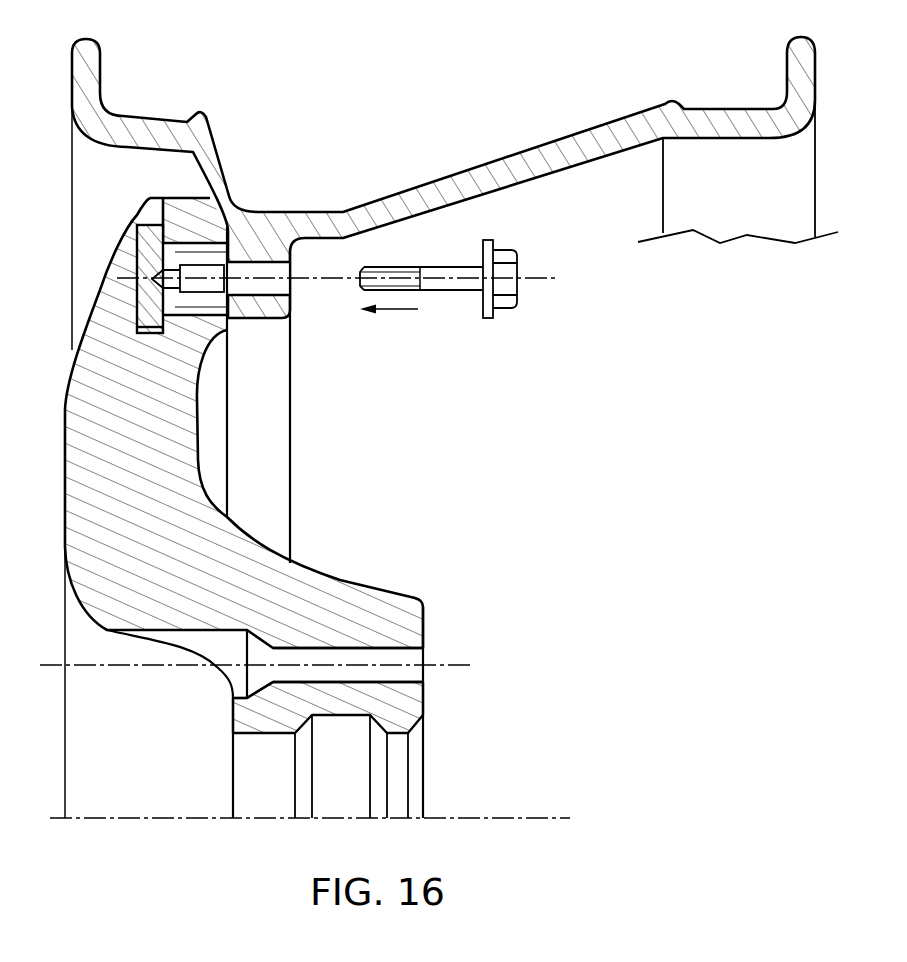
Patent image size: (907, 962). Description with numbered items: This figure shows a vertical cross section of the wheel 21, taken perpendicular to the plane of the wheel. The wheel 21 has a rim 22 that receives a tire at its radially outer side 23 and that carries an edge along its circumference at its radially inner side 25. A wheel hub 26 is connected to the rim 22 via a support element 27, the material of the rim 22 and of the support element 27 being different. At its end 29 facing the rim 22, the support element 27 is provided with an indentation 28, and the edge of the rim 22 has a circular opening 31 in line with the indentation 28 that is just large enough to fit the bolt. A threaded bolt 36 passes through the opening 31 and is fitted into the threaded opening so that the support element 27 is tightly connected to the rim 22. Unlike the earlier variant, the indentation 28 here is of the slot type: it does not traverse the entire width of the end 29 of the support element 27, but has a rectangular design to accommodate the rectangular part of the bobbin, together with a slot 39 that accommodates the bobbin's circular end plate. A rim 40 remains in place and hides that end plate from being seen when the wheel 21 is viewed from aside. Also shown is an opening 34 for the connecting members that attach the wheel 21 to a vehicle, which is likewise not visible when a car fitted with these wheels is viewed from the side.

The wheel 21 is at (817, 177).
The rim 22 is at (577, 143).
The radially outer side 23 is at (478, 138).
The radially inner side 25 is at (570, 230).
The wheel hub 26 is at (417, 783).
The support element 27 is at (177, 483).
The indentation 28 is at (168, 225).
The end 29 is at (177, 210).
The opening 31 is at (260, 267).
The opening 34 is at (418, 657).
The threaded bolt 36 is at (453, 292).
The slot 39 is at (148, 332).
The rim 40 is at (103, 293).